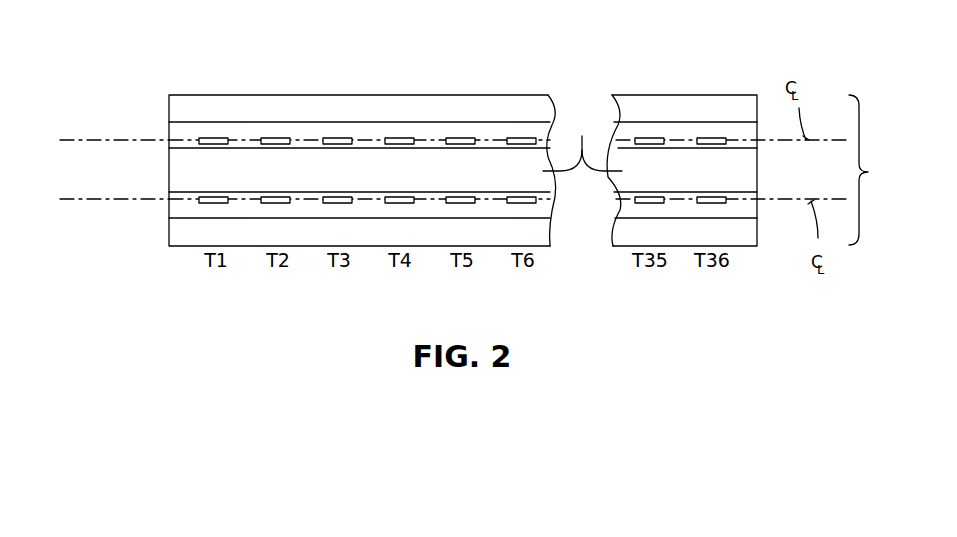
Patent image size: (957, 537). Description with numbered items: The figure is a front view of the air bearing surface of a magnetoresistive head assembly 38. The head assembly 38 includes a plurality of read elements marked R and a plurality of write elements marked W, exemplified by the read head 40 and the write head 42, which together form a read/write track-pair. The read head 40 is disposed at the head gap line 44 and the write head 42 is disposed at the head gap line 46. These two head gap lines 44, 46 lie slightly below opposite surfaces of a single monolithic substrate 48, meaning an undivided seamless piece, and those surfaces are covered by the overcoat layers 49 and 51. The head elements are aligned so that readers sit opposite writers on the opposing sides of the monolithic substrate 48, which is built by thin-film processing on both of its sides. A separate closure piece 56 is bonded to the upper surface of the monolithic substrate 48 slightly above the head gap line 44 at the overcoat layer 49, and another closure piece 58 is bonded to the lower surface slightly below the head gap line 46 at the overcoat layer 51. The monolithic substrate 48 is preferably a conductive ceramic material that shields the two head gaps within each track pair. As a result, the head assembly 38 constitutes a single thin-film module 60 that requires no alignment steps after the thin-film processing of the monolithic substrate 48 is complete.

The magnetoresistive head assembly 38 is at (168, 72).
The read head 40 is at (286, 138).
The write head 42 is at (268, 204).
The head gap line 44 is at (64, 139).
The head gap line 46 is at (64, 200).
The monolithic substrate 48 is at (582, 141).
The overcoat layer 49 is at (168, 140).
The overcoat layer 51 is at (169, 204).
The closure piece 56 is at (423, 99).
The closure piece 58 is at (425, 246).
The thin-film module 60 is at (876, 170).